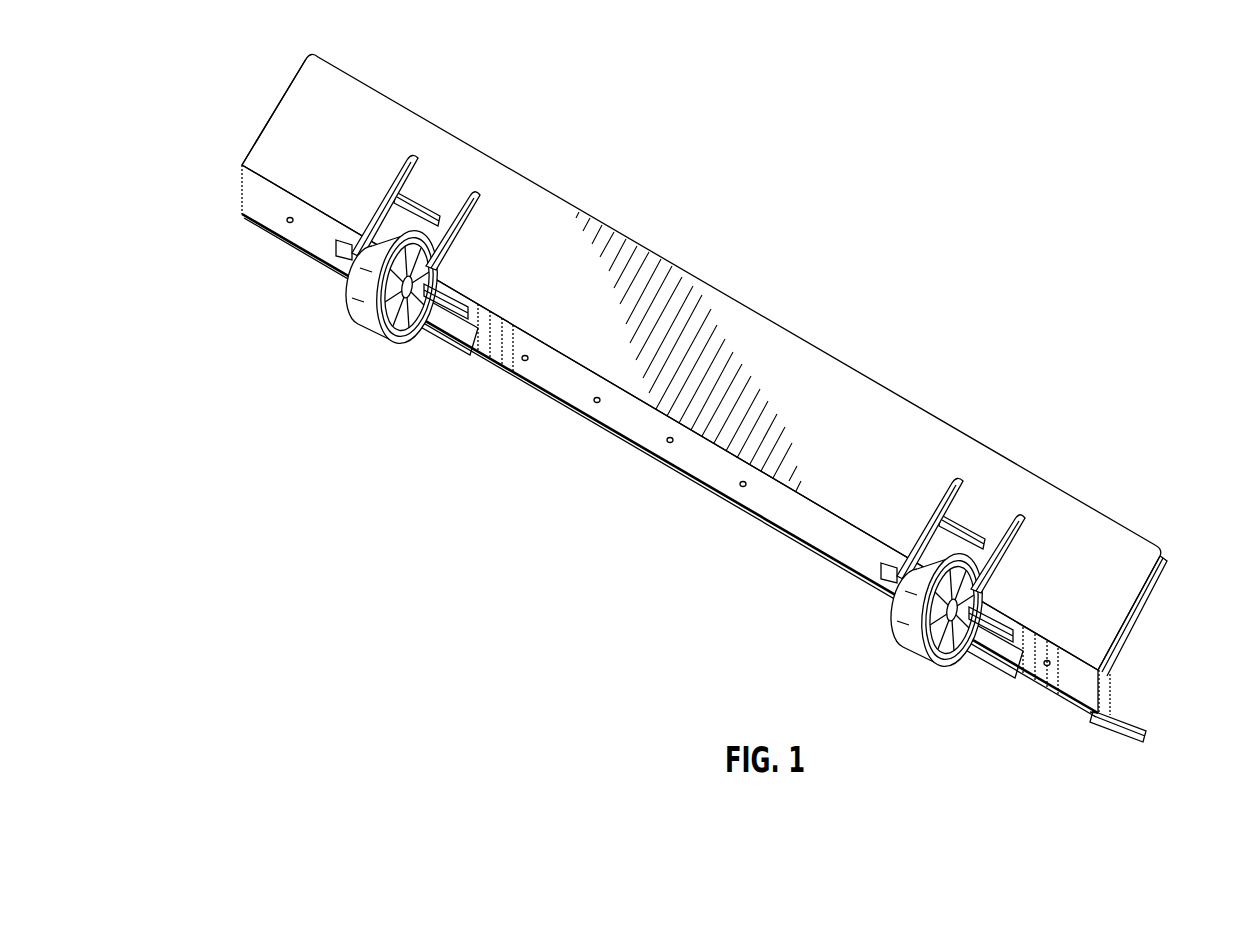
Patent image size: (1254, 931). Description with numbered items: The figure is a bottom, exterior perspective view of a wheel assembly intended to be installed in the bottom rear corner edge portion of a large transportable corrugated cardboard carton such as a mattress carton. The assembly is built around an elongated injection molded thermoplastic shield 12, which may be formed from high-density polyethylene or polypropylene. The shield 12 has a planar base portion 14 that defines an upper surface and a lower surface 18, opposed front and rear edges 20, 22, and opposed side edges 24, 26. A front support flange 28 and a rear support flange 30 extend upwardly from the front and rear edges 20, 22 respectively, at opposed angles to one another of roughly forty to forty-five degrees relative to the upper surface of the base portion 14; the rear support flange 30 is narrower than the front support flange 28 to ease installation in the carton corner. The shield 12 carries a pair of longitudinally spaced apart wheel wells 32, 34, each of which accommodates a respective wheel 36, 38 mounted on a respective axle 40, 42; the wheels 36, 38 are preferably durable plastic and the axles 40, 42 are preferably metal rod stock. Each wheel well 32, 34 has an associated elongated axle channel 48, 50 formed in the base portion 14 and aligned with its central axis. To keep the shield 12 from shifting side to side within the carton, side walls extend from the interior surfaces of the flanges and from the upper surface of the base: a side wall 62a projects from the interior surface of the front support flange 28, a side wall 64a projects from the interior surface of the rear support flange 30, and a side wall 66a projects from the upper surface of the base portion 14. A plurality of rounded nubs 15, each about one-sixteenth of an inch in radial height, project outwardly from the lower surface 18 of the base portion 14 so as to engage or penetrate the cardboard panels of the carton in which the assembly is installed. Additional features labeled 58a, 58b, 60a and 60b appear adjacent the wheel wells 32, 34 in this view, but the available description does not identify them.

The shield 12 is at (908, 402).
The base portion 14 is at (692, 458).
The rounded nubs 15 is at (596, 403).
The lower surface 18 is at (762, 506).
The front edge 20 is at (262, 177).
The rear edge 22 is at (252, 222).
The side edge 24 is at (238, 190).
The side edge 26 is at (1085, 712).
The front support flange 28 is at (1115, 546).
The rear support flange 30 is at (1112, 740).
The wheel well 32 is at (412, 194).
The wheel well 34 is at (998, 490).
The wheel 36 is at (365, 337).
The wheel 38 is at (921, 632).
The axle 40 is at (437, 347).
The axle 42 is at (969, 647).
The axle channel 48 is at (445, 313).
The axle channel 50 is at (991, 677).
The first guide arm 58a is at (395, 200).
The second guide arm 58b is at (472, 202).
The third guide arm 60a is at (910, 515).
The fourth guide arm 60b is at (1029, 554).
The side wall 62a is at (1152, 607).
The side wall 64a is at (1145, 729).
The side wall 66a is at (1112, 690).